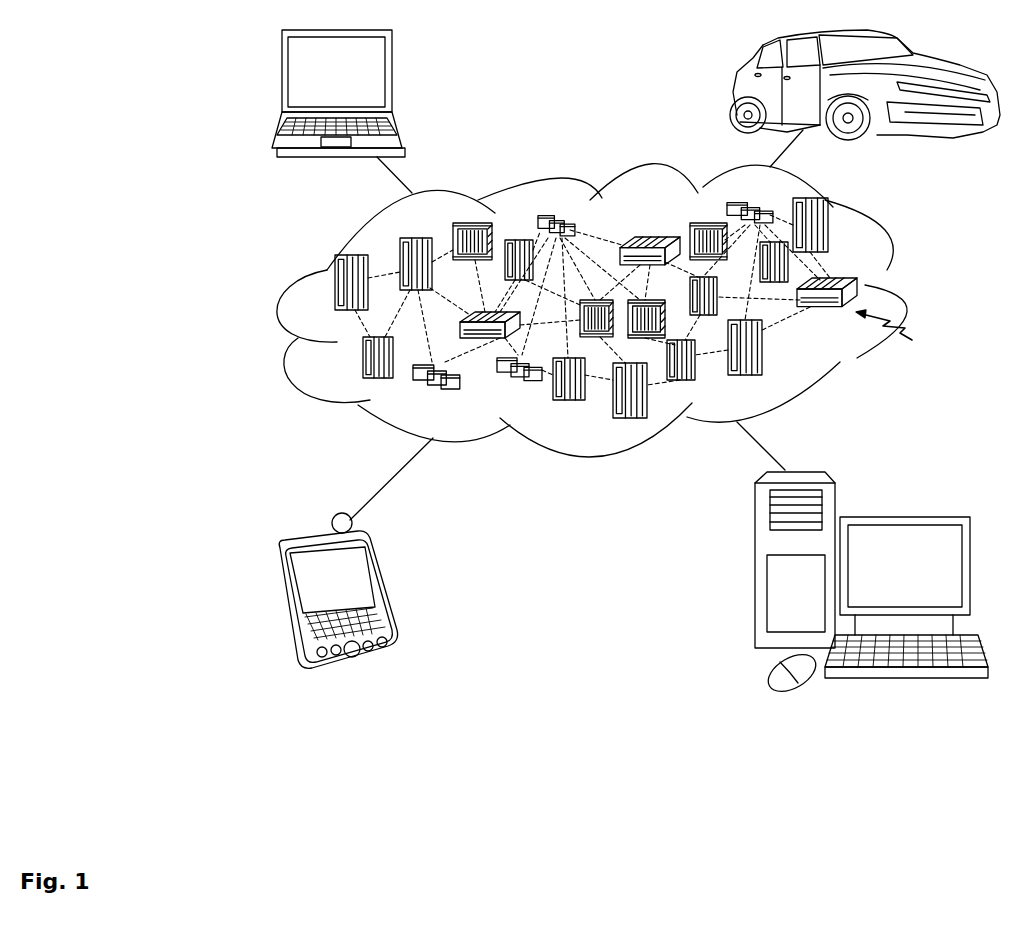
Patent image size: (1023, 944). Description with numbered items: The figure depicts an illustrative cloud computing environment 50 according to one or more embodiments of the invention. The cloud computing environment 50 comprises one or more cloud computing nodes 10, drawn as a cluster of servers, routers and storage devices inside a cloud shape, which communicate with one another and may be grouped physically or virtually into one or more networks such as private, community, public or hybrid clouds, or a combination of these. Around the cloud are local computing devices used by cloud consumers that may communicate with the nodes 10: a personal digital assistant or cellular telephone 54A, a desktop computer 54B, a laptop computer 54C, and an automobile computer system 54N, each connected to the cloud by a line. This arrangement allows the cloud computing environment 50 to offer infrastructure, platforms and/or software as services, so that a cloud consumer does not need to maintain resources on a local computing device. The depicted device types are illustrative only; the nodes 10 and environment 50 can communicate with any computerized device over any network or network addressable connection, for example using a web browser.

The cloud computing nodes 10 is at (894, 331).
The cloud computing environment 50 is at (903, 290).
The personal digital assistant or cellular telephone 54A is at (380, 590).
The desktop computer 54B is at (903, 517).
The laptop computer 54C is at (392, 78).
The automobile computer system 54N is at (733, 93).